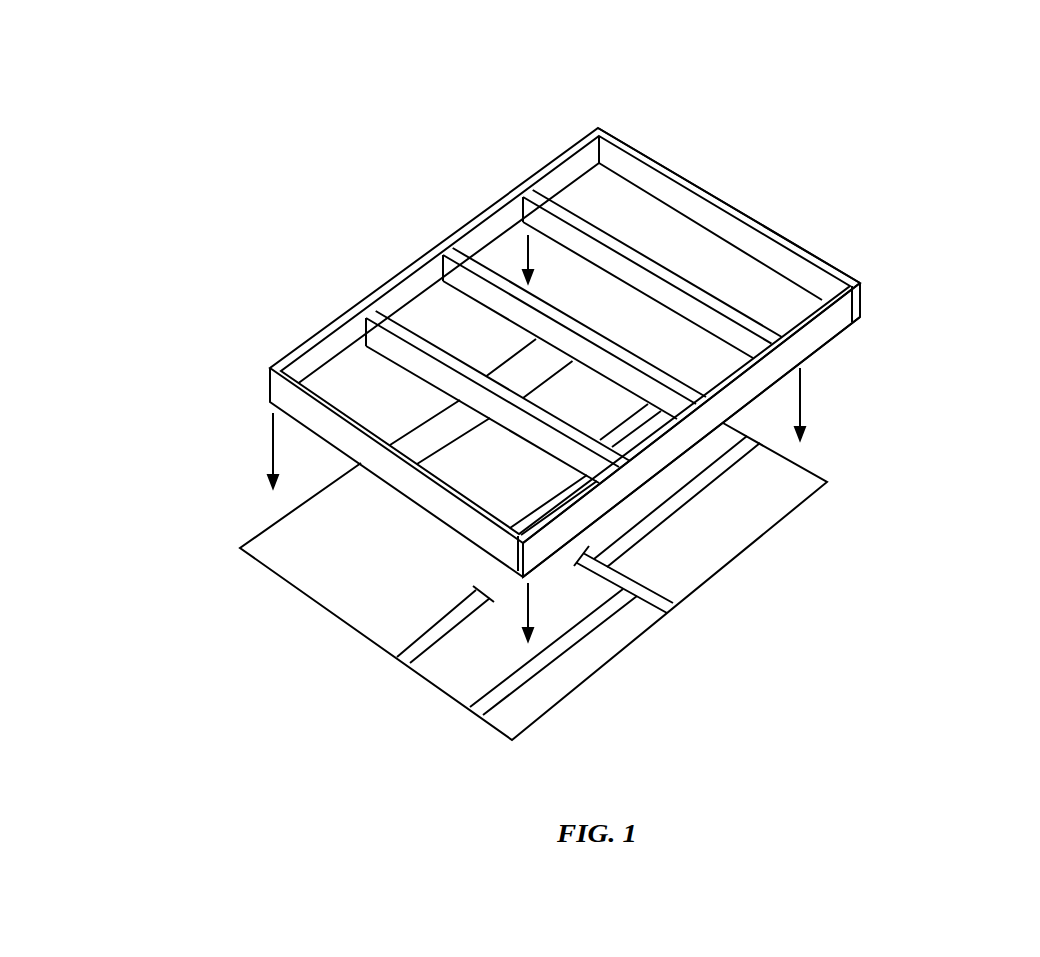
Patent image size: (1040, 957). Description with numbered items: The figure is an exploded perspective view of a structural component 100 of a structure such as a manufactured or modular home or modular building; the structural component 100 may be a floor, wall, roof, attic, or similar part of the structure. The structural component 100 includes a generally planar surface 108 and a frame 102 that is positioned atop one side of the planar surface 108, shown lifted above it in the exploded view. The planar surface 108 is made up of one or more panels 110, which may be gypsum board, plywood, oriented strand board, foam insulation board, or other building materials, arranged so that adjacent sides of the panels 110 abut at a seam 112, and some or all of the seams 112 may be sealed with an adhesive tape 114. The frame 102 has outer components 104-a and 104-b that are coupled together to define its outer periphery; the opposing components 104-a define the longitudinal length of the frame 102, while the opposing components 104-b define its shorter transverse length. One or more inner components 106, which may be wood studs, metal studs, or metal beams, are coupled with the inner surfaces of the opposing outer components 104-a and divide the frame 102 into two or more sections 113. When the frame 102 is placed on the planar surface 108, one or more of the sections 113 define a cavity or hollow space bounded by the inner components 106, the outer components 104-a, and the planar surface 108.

The structural component 100 is at (878, 199).
The frame 102 is at (898, 318).
The outer component 104-a is at (832, 322).
The outer component 104-b is at (697, 187).
The inner component 106 is at (560, 193).
The planar surface 108 is at (836, 495).
The panel 110 is at (737, 518).
The seam 112 is at (335, 583).
The section 113 is at (503, 274).
The adhesive tape 114 is at (663, 613).